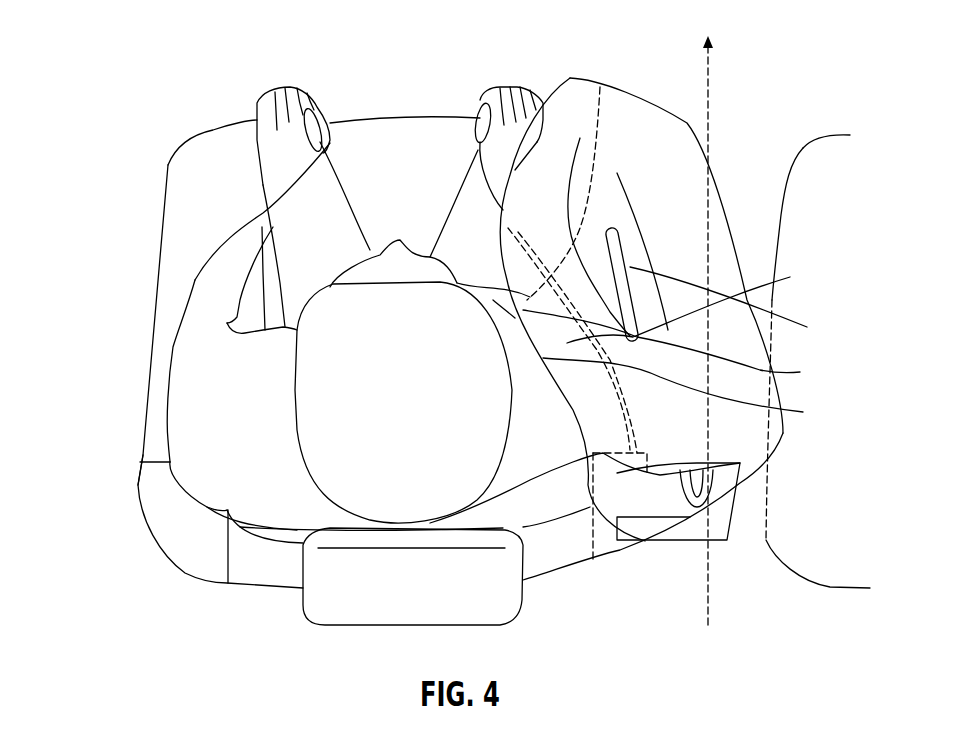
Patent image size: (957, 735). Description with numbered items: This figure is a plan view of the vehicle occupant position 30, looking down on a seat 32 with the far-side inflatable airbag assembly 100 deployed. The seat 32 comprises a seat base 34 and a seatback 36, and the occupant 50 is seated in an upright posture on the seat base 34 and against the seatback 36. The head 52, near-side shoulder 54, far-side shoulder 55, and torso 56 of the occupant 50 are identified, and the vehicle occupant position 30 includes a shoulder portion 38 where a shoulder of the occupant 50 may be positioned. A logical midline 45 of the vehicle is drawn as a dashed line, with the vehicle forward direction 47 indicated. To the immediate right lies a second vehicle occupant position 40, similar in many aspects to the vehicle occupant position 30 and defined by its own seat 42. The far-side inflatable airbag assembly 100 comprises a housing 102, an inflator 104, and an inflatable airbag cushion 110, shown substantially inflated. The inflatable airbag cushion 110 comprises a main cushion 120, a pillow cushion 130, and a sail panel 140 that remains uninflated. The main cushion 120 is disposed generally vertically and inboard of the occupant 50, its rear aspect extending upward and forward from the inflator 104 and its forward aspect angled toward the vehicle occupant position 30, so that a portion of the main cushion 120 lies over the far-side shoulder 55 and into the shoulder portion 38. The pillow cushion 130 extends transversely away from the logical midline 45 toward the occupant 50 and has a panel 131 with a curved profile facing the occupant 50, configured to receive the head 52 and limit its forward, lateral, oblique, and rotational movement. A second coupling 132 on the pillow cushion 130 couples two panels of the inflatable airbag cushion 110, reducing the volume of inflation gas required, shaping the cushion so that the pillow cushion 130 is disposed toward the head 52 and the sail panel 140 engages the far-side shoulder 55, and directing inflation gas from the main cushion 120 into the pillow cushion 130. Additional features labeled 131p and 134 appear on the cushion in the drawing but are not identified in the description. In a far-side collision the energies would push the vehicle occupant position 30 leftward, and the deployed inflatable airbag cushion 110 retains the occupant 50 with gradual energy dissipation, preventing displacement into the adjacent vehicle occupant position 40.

The vehicle occupant position 30 is at (120, 104).
The seat 32 is at (152, 358).
The seat base 34 is at (410, 181).
The seatback 36 is at (273, 581).
The shoulder portion 38 is at (553, 560).
The second vehicle occupant position 40 is at (830, 138).
The seat 42 is at (767, 540).
The logical midline 45 is at (707, 600).
The vehicle forward direction 47 is at (703, 45).
The occupant 50 is at (143, 289).
The head 52 is at (417, 419).
The near-side shoulder 54 is at (260, 456).
The far-side shoulder 55 is at (557, 456).
The torso 56 is at (493, 300).
The far-side inflatable airbag assembly 100 is at (688, 121).
The housing 102 is at (580, 540).
The inflator 104 is at (618, 548).
The inflatable airbag cushion 110 is at (717, 177).
The main cushion 120 is at (673, 169).
The pillow cushion 130 is at (563, 209).
The panel 131 is at (695, 394).
The tether panel 131p is at (690, 350).
The second coupling 132 is at (710, 306).
The airbag side panel 134 is at (503, 211).
The sail panel 140 is at (582, 193).